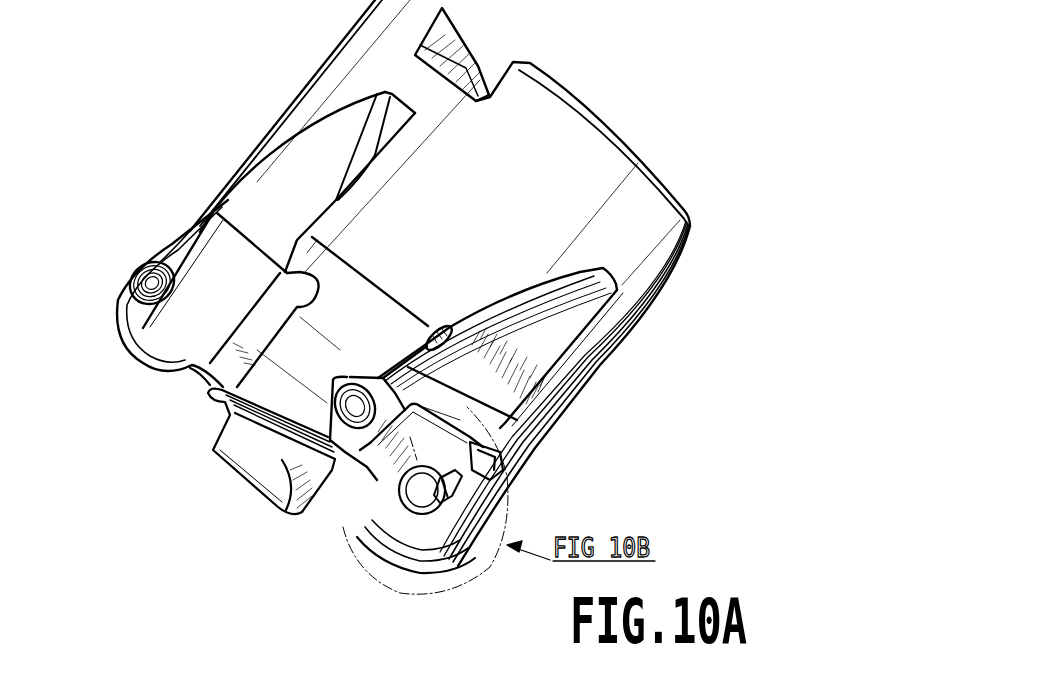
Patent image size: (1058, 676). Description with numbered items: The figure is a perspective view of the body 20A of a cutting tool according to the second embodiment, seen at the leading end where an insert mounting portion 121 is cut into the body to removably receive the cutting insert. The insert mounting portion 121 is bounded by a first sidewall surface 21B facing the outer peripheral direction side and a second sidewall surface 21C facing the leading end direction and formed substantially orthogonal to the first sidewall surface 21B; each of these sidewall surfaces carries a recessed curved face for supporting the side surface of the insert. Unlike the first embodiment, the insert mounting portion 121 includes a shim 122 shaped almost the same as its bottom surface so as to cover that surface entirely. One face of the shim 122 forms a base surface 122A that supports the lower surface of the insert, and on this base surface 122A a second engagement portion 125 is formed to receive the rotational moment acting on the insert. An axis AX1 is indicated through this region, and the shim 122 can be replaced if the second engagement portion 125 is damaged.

The housing body 20A is at (579, 106).
The second sidewall surface 21C is at (470, 435).
The insert mounting portion 121 is at (467, 475).
The shim 122 is at (382, 527).
The base surface 122A is at (407, 531).
The second engagement portion 125 is at (448, 511).
The axis AX1 is at (512, 484).
The first sidewall surface 21B is at (367, 452).